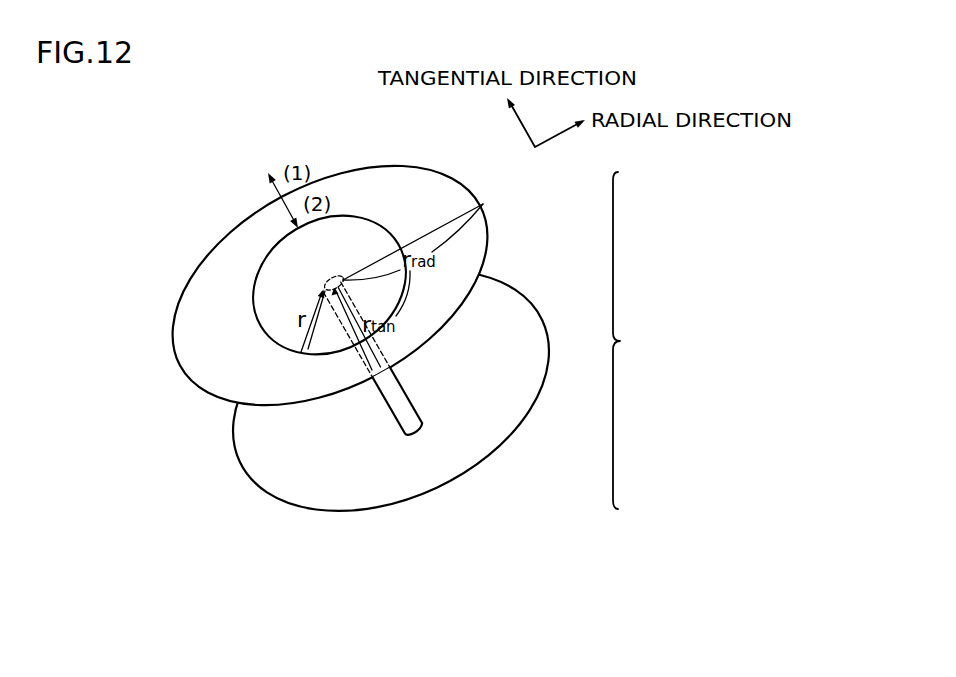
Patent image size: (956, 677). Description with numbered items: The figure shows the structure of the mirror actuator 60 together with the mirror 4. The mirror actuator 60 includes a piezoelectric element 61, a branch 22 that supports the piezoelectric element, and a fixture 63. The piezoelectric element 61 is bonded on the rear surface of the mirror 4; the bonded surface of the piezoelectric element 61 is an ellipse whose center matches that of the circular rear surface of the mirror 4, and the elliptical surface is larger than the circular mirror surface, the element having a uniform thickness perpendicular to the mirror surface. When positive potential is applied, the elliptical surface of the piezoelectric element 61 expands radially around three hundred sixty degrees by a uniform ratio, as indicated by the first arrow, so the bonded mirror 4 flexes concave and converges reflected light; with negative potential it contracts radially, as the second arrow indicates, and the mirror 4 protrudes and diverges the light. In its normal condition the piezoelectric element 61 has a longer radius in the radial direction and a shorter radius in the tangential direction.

The mirror 4 is at (364, 216).
The branch 22 is at (401, 404).
The mirror actuator 60 is at (632, 340).
The piezoelectric element 61 is at (489, 238).
The fixture 63 is at (549, 342).